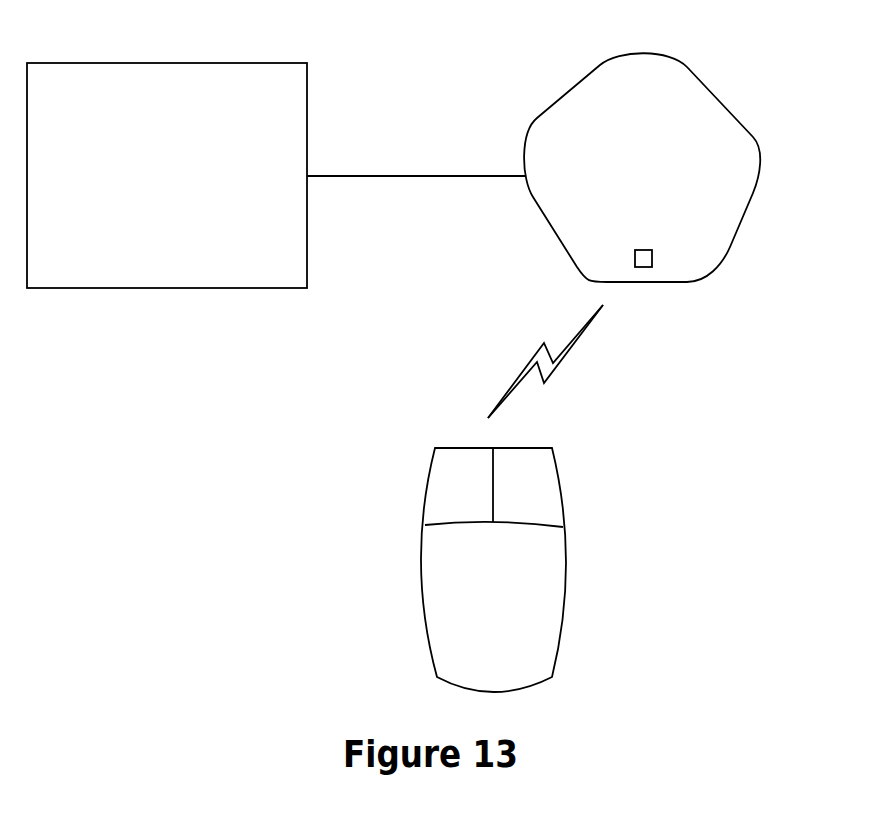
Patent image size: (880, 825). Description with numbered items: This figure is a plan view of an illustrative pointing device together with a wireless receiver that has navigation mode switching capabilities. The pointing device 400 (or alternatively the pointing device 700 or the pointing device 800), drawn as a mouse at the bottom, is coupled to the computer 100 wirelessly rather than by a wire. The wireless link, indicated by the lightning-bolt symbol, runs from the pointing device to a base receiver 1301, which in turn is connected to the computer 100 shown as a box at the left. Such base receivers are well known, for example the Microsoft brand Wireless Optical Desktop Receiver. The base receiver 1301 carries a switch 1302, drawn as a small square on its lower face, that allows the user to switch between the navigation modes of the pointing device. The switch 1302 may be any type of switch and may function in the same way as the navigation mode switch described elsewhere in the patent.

The computer 100 is at (151, 198).
The base receiver 1301 is at (620, 184).
The switch 1302 is at (652, 258).
The pointing device 400 is at (366, 522).
The pointing device 700 is at (493, 570).
The pointing device 800 is at (493, 570).